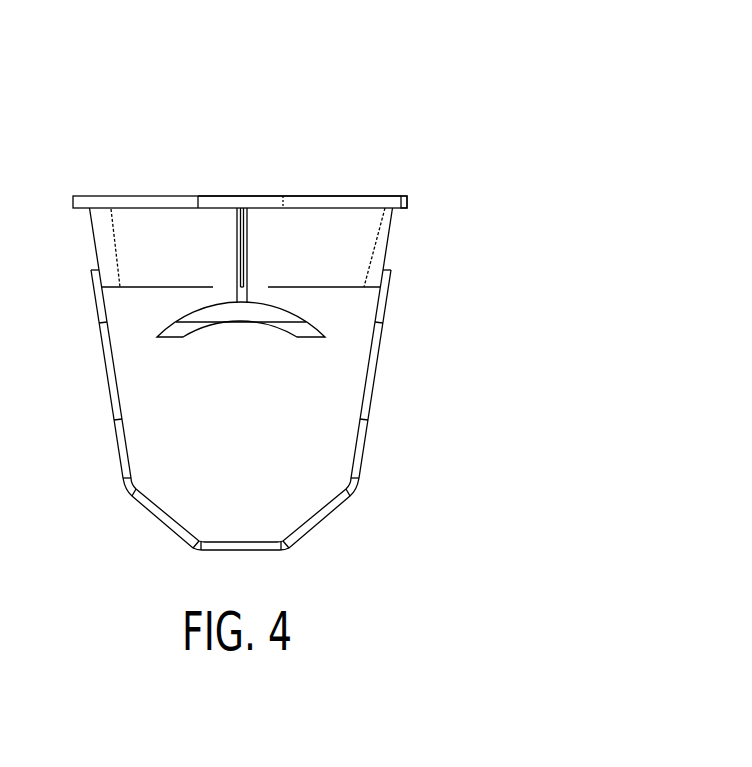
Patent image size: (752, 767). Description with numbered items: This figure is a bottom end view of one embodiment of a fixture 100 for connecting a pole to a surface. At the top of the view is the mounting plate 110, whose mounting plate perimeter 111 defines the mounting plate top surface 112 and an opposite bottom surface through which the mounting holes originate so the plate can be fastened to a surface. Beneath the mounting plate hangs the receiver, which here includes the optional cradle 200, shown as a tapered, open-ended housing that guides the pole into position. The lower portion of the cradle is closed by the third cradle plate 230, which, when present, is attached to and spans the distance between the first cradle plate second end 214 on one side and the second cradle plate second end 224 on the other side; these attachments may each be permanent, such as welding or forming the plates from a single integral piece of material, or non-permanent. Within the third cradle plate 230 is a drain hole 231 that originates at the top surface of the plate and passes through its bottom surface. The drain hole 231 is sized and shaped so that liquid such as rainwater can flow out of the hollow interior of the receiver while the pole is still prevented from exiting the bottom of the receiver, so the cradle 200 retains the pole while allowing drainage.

The fixture 100 is at (303, 91).
The mounting plate 110 is at (287, 205).
The mounting plate perimeter 111 is at (406, 210).
The mounting plate top surface 112 is at (331, 196).
The cradle 200 is at (102, 236).
The first cradle plate second end 214 is at (115, 438).
The second cradle plate second end 224 is at (368, 433).
The third cradle plate 230 is at (242, 410).
The drain hole 231 is at (299, 329).